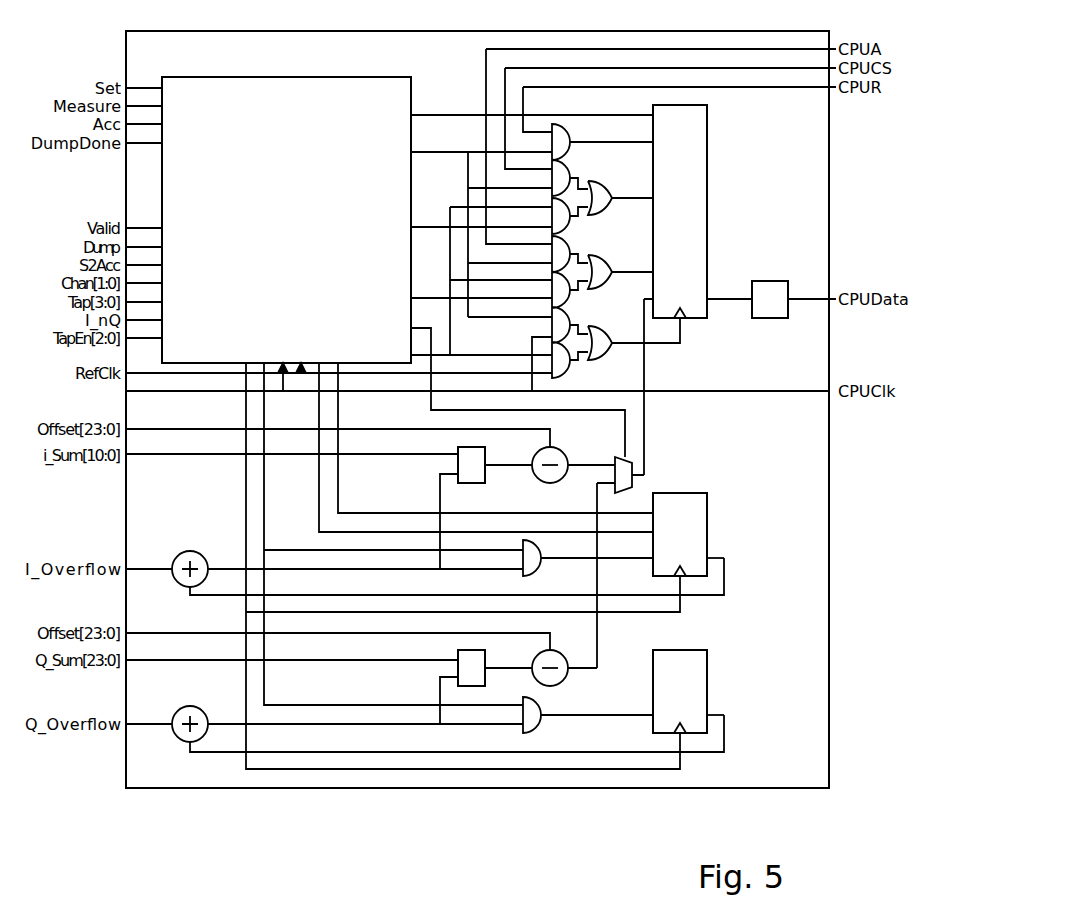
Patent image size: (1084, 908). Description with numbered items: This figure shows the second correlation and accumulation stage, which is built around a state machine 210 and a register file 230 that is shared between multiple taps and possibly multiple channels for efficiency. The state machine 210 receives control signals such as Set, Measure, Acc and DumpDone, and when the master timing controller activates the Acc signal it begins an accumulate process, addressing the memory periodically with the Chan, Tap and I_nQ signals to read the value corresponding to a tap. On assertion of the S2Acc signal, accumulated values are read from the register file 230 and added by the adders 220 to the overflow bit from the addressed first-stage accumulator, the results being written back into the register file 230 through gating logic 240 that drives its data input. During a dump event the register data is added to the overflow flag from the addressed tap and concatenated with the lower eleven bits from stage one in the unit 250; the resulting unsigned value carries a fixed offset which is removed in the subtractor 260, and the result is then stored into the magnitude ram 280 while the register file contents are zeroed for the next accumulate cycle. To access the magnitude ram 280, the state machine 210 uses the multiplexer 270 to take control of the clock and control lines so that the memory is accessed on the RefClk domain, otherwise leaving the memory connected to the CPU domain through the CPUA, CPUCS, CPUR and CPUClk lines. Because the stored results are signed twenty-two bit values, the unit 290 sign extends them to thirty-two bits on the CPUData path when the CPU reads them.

The state machine 210 is at (264, 118).
The adders 220 is at (200, 566).
The register file 230 is at (704, 549).
The AND gate 240 is at (532, 550).
The unit 250 is at (458, 456).
The subtractor 260 is at (563, 458).
The multiplexer 270 is at (560, 140).
The magnitude ram 280 is at (695, 178).
The unit 290 is at (770, 318).